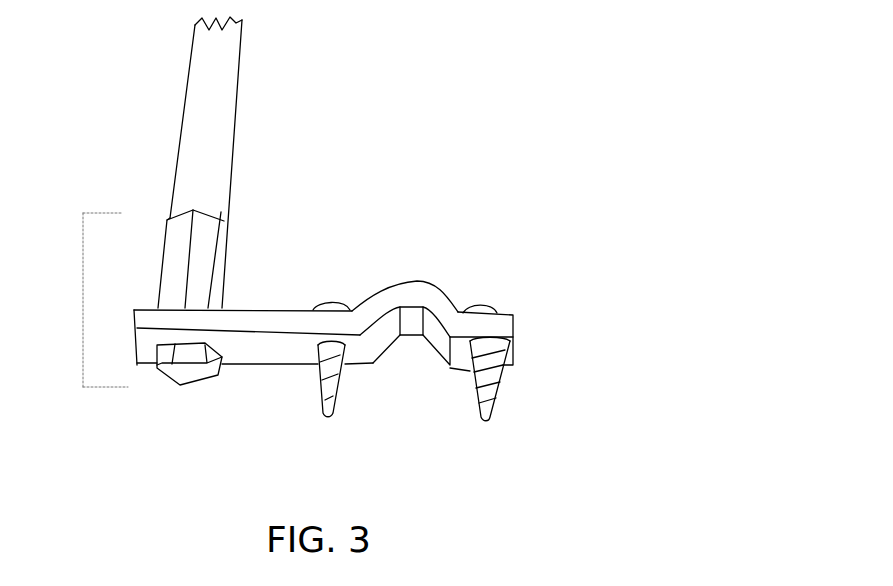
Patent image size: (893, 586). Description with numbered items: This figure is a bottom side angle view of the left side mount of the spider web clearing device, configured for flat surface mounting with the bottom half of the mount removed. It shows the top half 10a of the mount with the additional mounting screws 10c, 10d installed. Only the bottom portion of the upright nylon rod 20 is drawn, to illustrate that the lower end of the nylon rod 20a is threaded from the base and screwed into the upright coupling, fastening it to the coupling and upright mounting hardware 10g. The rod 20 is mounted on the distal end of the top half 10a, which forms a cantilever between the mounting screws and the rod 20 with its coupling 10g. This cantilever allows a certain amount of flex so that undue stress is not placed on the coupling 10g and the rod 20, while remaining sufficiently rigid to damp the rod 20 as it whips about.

The upright nylon rod 20 is at (215, 115).
The lower end of the nylon rod 20a is at (198, 243).
The top half of the mount 10a is at (403, 283).
The mounting screw 10c is at (333, 402).
The mounting screw 10d is at (465, 390).
The coupling and upright mounting hardware 10g is at (80, 300).